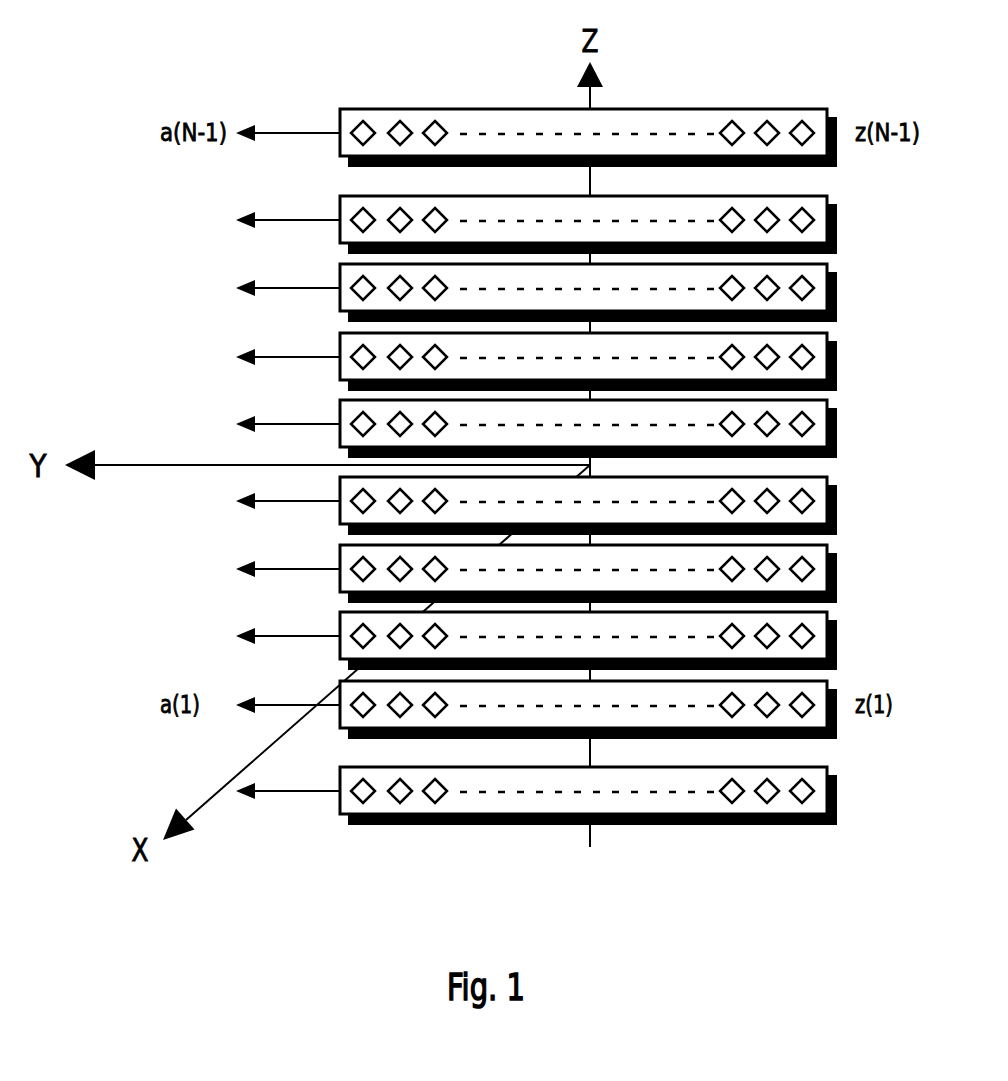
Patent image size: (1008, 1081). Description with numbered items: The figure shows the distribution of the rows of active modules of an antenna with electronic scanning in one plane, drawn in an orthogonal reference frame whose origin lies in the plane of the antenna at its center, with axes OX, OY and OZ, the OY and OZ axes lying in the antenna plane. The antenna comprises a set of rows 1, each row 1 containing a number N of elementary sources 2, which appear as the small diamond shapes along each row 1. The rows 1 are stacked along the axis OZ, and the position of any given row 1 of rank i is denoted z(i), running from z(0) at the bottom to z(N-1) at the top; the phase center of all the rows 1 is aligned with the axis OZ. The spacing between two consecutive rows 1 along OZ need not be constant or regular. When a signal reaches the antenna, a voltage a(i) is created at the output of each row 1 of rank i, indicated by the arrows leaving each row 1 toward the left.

The row 1 is at (536, 90).
The elementary source 2 is at (363, 122).
The bottom array module (index 0) 0 is at (526, 796).